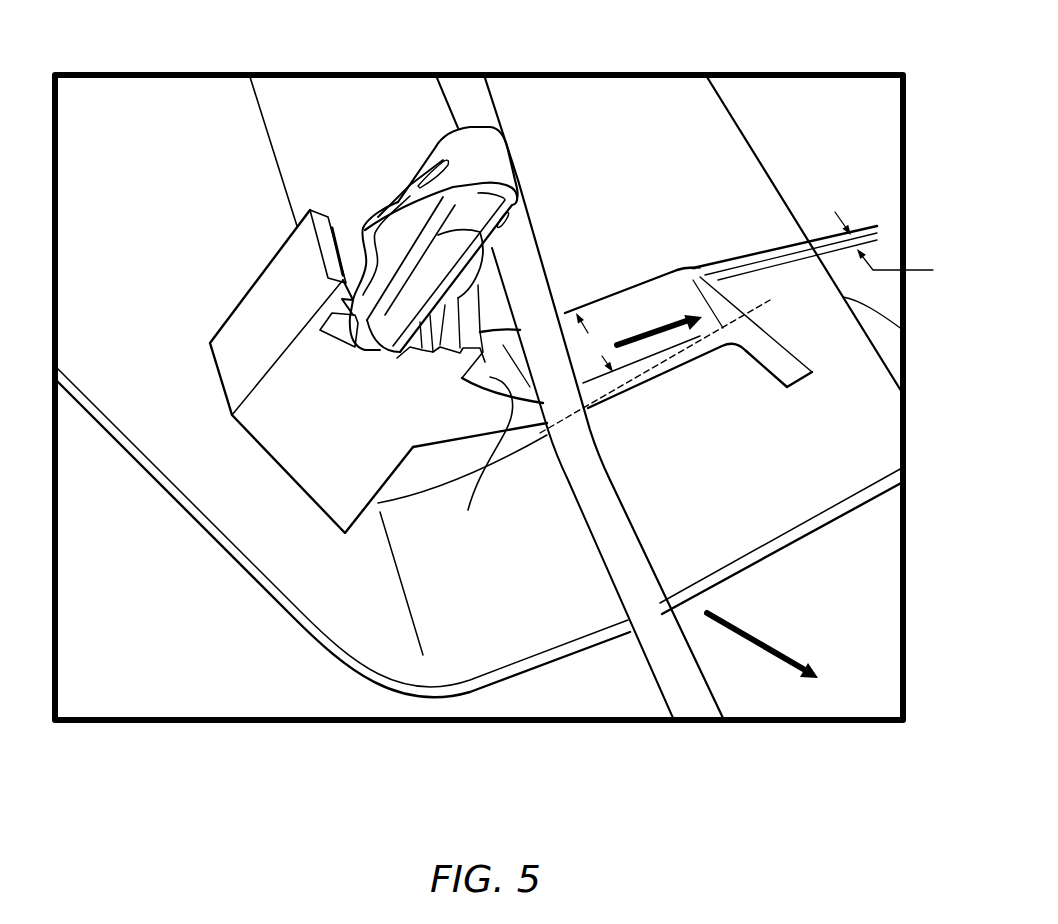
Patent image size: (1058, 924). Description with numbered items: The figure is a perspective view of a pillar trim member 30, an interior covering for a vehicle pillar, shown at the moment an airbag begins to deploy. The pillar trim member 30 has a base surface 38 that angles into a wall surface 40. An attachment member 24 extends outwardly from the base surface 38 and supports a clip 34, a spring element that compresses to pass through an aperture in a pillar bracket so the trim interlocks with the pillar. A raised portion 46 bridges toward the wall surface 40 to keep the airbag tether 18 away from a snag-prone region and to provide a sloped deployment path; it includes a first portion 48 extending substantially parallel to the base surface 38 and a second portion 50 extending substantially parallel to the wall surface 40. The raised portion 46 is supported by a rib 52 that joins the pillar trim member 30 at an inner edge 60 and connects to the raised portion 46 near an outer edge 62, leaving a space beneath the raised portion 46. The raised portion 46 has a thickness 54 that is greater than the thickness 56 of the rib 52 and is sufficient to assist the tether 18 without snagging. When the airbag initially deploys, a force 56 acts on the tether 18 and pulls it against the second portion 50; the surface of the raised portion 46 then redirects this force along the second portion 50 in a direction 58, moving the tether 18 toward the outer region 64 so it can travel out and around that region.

The tether 18 is at (685, 692).
The attachment member 24 is at (193, 215).
The pillar trim member 30 is at (193, 593).
The clip 34 is at (478, 140).
The base surface 38 is at (245, 512).
The wall surface 40 is at (725, 511).
The raised portion 46 is at (710, 395).
The first portion 48 is at (478, 468).
The second portion 50 is at (660, 310).
The rib 52 is at (756, 248).
The thickness of raised portion 54 is at (594, 342).
The force 56 is at (748, 632).
The direction 58 is at (633, 348).
The inner edge 60 is at (503, 462).
The outer edge 62 is at (724, 262).
The outer region 64 is at (843, 297).